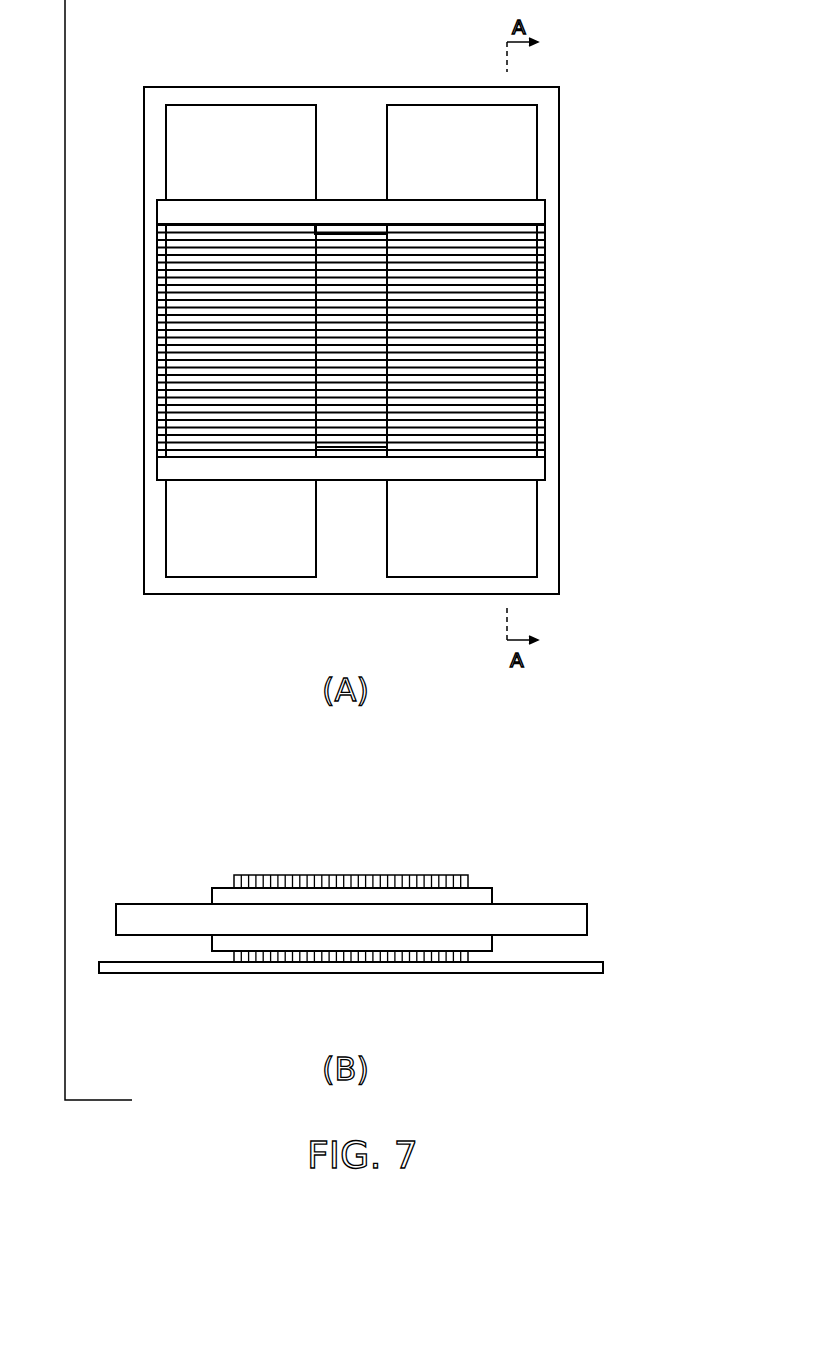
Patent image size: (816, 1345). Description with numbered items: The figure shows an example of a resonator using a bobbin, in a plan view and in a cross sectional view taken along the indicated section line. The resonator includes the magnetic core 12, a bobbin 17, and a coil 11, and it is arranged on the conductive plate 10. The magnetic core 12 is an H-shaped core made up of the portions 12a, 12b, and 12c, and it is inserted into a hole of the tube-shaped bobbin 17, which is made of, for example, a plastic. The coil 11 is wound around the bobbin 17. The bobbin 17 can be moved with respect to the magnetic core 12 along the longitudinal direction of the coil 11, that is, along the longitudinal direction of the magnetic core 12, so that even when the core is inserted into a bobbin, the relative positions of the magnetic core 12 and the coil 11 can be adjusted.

The conductive plate 10 is at (390, 86).
The coil 11 is at (545, 294).
The magnetic core 12 is at (394, 477).
The magnetic core portion 12a is at (255, 104).
The magnetic core portion 12b is at (477, 104).
The magnetic core portion 12c is at (352, 232).
The bobbin 17 is at (479, 200).